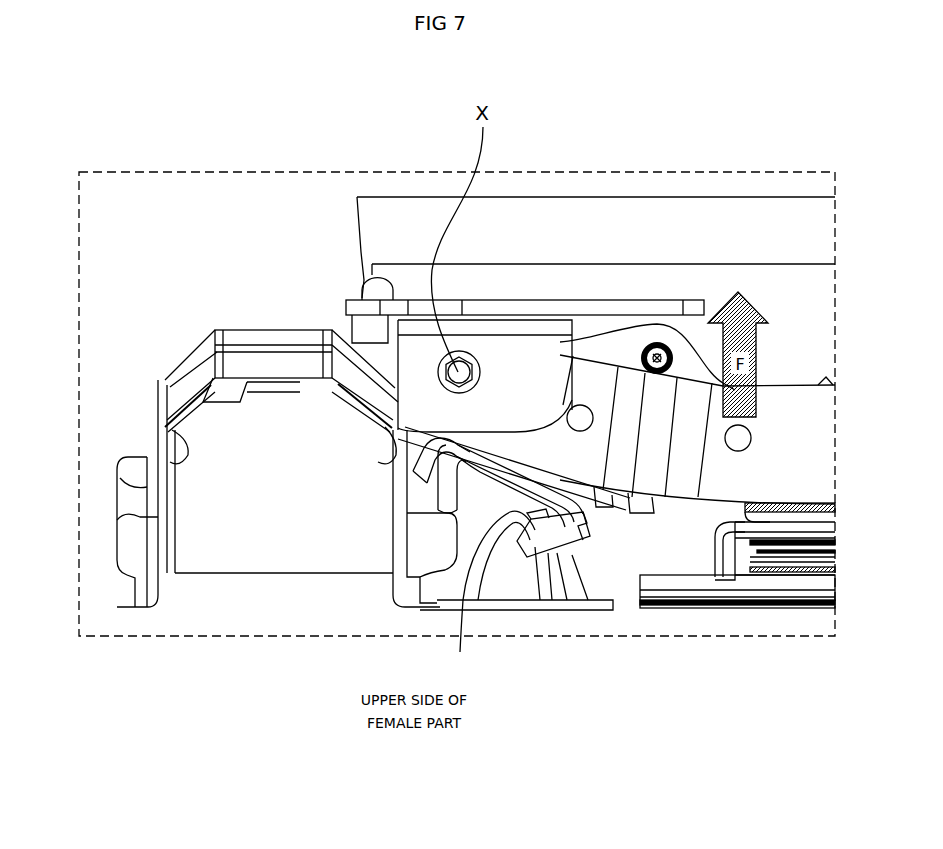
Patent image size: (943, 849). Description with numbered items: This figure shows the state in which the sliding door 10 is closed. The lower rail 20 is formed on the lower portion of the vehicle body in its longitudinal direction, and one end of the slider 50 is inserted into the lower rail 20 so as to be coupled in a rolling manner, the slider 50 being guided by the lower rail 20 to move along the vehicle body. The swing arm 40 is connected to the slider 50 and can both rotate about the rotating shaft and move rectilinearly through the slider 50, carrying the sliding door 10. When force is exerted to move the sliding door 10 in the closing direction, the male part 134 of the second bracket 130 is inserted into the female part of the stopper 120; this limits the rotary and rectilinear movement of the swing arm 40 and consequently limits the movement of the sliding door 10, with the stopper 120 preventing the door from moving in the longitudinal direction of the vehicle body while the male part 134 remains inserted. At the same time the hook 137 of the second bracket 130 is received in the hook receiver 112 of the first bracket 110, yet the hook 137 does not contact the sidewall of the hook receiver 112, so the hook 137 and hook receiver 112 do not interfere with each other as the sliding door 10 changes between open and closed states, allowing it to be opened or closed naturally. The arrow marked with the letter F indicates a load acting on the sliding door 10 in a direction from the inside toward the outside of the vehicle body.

The sliding door 10 is at (540, 232).
The swing arm 40 is at (590, 393).
The first bracket 110 is at (252, 548).
The hook receiver 112 is at (340, 480).
The hook 137 is at (403, 513).
The male part 134 is at (533, 552).
The second bracket 130 is at (580, 558).
The stopper 120 is at (507, 590).
The lower rail 20 is at (730, 590).
The slider 50 is at (792, 513).